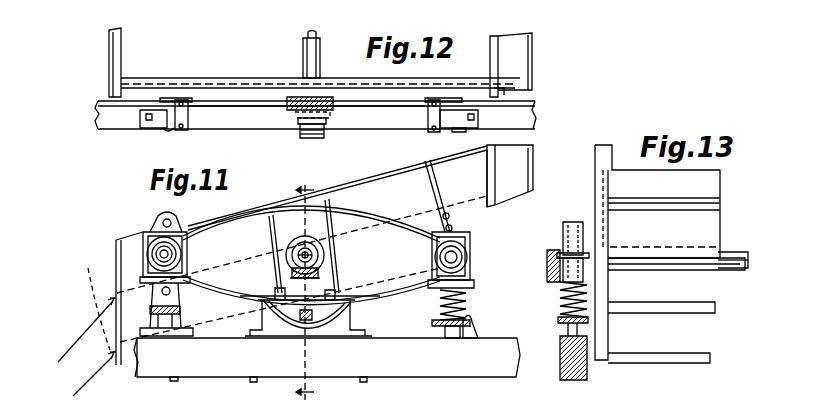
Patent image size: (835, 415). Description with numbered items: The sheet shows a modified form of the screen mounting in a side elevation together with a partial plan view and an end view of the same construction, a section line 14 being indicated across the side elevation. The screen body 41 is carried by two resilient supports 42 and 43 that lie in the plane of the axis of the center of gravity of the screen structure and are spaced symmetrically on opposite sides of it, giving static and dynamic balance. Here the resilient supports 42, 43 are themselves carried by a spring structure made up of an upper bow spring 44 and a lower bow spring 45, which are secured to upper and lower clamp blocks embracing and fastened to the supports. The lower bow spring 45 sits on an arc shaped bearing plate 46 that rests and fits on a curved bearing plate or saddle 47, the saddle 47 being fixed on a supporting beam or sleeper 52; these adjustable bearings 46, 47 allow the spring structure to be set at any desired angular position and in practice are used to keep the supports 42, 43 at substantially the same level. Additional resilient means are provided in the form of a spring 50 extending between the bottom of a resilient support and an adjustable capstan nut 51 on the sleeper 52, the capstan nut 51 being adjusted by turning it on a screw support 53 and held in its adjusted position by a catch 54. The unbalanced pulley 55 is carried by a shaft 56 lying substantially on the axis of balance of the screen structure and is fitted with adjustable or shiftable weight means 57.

In FIG. 11, the section line 14 is at (305, 290).
In FIG. 11, the screen body 41 is at (324, 255).
In FIG. 13, the screen body 41 is at (594, 186).
In FIG. 11, the resilient support 42 is at (146, 233).
In FIG. 11, the resilient support 43 is at (472, 256).
In FIG. 12, the upper bow spring 44 is at (386, 116).
In FIG. 11, the upper bow spring 44 is at (208, 226).
In FIG. 11, the lower bow spring 45 is at (270, 298).
In FIG. 11, the arc shaped bearing plate 46 is at (352, 302).
In FIG. 11, the curved bearing plate or saddle 47 is at (366, 322).
In FIG. 11, the spring 50 is at (467, 300).
In FIG. 13, the spring 50 is at (590, 298).
In FIG. 11, the spring plate 51 is at (472, 322).
In FIG. 13, the spring plate 51 is at (589, 320).
In FIG. 11, the supporting beam or sleeper 52 is at (327, 360).
In FIG. 13, the supporting beam or sleeper 52 is at (588, 370).
In FIG. 11, the screw support 53 is at (445, 330).
In FIG. 11, the catch 54 is at (480, 325).
In FIG. 12, the unbalanced pulley 55 is at (290, 104).
In FIG. 13, the unbalanced pulley 55 is at (548, 262).
In FIG. 12, the shaft 56 is at (304, 34).
In FIG. 11, the shaft 56 is at (312, 255).
In FIG. 13, the shaft 56 is at (746, 256).
In FIG. 11, the adjustable or shiftable weight means 57 is at (318, 274).